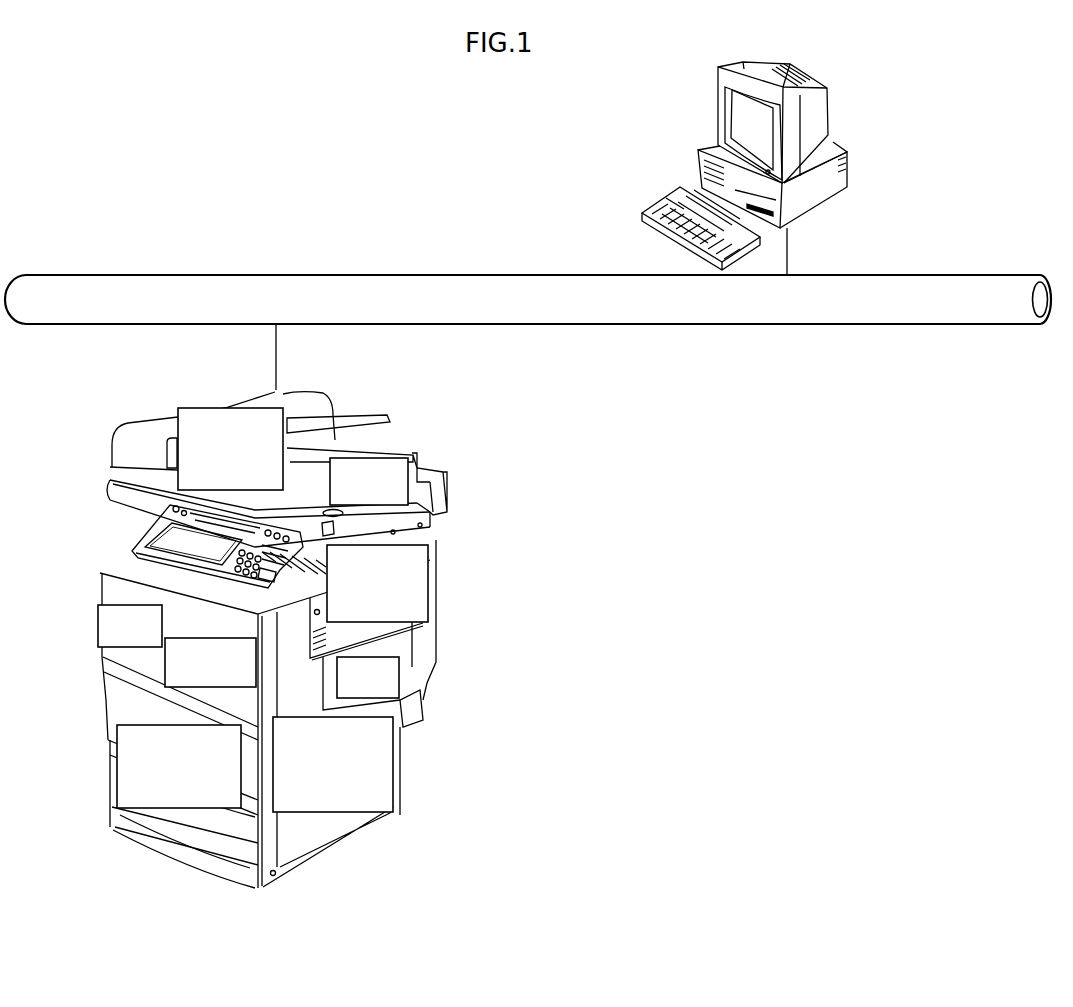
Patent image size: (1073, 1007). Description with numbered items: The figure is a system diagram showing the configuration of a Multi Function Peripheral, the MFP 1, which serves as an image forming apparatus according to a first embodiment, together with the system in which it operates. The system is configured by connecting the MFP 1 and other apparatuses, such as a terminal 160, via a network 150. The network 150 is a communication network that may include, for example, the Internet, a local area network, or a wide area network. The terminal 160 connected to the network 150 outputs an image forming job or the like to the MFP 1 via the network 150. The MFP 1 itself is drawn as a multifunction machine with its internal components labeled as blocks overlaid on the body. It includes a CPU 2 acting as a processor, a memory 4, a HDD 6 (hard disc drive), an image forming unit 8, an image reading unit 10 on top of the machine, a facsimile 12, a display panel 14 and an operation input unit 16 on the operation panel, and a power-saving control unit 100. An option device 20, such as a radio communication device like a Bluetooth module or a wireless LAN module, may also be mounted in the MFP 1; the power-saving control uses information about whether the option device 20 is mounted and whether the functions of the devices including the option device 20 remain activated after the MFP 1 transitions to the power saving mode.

The MFP 1 is at (456, 455).
The CPU 2 is at (98, 622).
The memory 4 is at (165, 677).
The HDD 6 is at (400, 686).
The image forming unit 8 is at (428, 572).
The image reading unit 10 is at (178, 440).
The facsimile 12 is at (408, 480).
The display panel 14 is at (177, 537).
The operation input unit 16 is at (168, 508).
The option device 20 is at (110, 768).
The power-saving control unit 100 is at (393, 778).
The network 150 is at (928, 325).
The terminal 160 is at (850, 167).